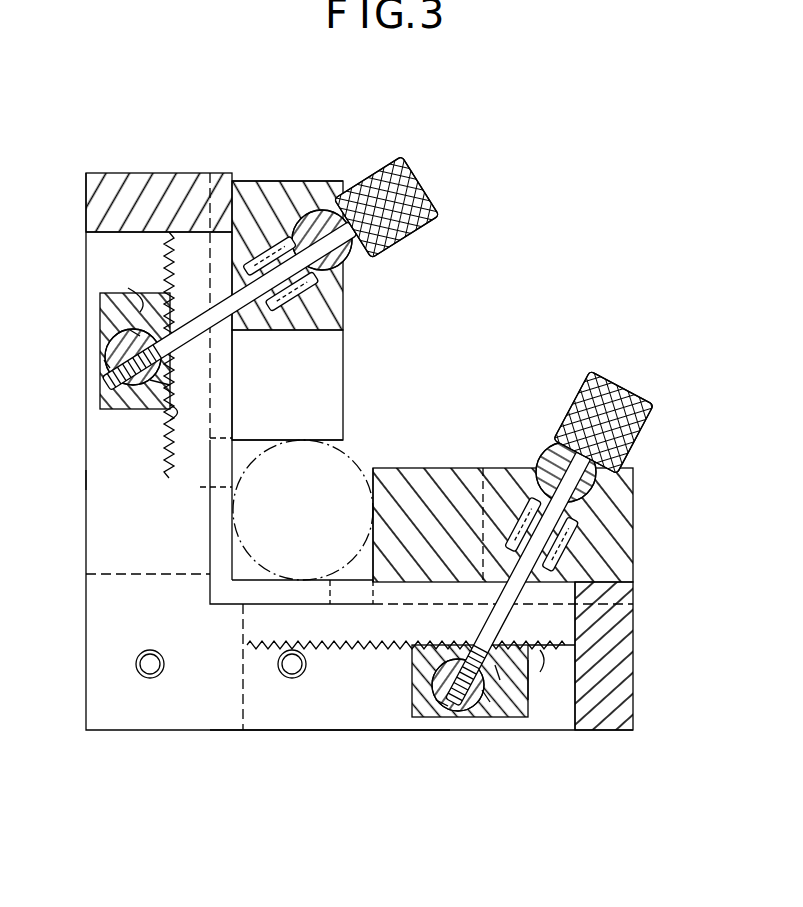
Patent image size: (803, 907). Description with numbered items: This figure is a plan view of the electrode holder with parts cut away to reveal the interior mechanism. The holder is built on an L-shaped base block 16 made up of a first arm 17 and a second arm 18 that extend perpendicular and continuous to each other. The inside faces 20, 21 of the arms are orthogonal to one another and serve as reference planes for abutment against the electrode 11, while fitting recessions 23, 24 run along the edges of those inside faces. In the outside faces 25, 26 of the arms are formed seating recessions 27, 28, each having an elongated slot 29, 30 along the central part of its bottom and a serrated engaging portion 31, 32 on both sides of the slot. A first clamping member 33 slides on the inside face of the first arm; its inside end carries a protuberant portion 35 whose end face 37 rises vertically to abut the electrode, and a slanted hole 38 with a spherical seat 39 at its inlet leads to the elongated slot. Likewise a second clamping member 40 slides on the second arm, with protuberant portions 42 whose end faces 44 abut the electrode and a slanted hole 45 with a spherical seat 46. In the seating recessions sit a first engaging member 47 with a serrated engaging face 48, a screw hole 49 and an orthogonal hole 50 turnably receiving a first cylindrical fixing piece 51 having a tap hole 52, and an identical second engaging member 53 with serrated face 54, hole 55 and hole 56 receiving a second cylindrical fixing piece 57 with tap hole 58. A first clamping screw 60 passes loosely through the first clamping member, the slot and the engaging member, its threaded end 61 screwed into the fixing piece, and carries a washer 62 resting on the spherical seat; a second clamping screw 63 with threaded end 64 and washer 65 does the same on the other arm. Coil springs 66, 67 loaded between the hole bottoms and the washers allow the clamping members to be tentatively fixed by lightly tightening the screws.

The electrode 11 is at (366, 412).
The L-shaped base block 16 is at (162, 732).
The first arm 17 is at (305, 700).
The second arm 18 is at (104, 522).
The inside face 20 is at (303, 580).
The inside face 21 is at (234, 500).
The fitting recession 23 is at (290, 604).
The fitting recession 24 is at (160, 556).
The outside face 25 is at (340, 732).
The outside face 26 is at (86, 477).
The seating recession 27 is at (574, 686).
The seating recession 28 is at (118, 241).
The elongated slot 29 is at (560, 700).
The elongated slot 30 is at (211, 242).
The engaging portion 31 is at (398, 648).
The engaging portion 32 is at (168, 436).
The first clamping member 33 is at (633, 561).
The protuberant portion 35 is at (446, 481).
The end face 37 is at (378, 466).
The hole 38 is at (490, 520).
The spherical seat 39 is at (610, 515).
The second clamping member 40 is at (272, 181).
The protuberant portion 42 is at (343, 362).
The end face 44 is at (300, 440).
The hole 45 is at (343, 338).
The spherical seat 46 is at (318, 183).
The first engaging member 47 is at (437, 717).
The serrated engaging face 48 is at (557, 648).
The hole 49 is at (545, 685).
The hole 50 is at (433, 672).
The first cylindrical fixing piece 51 is at (487, 717).
The tap hole 52 is at (468, 705).
The second engaging member 53 is at (100, 316).
The serrated engaging face 54 is at (166, 412).
The hole 55 is at (140, 289).
The hole 56 is at (135, 332).
The second cylindrical fixing piece 57 is at (168, 380).
The tap hole 58 is at (116, 351).
The first clamping screw 60 is at (641, 392).
The threaded end 61 is at (452, 708).
The washer 62 is at (550, 470).
The second clamping screw 63 is at (442, 178).
The threaded end 64 is at (118, 376).
The washer 65 is at (386, 276).
The coil spring 66 is at (616, 532).
The coil spring 67 is at (343, 322).